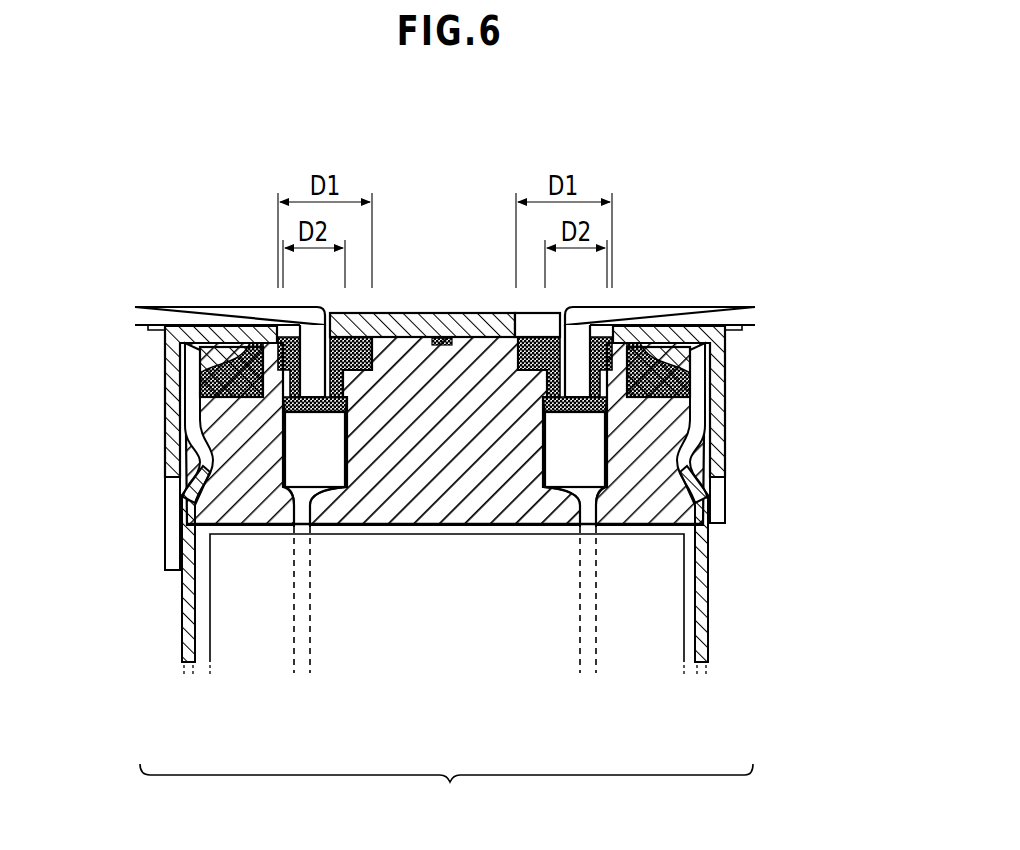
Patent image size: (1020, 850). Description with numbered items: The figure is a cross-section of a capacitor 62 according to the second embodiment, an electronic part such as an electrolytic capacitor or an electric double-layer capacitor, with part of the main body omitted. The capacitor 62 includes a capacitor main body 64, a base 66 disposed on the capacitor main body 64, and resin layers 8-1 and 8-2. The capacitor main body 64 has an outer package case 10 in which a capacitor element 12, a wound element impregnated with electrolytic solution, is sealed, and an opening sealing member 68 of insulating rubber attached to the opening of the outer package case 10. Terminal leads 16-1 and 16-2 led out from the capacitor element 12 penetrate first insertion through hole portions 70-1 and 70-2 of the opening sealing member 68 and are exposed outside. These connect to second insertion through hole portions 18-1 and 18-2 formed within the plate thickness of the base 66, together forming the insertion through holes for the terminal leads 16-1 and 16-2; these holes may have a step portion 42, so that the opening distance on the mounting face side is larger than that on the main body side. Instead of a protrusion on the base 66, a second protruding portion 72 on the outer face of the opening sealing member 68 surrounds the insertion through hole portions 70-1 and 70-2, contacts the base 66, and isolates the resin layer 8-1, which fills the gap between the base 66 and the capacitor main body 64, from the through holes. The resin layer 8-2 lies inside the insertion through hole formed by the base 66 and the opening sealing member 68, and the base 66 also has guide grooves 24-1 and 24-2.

The resin layer 8-1 is at (225, 363).
The resin layer 8-2 is at (360, 337).
The outer package case 10 is at (710, 642).
The capacitor element 12 is at (665, 615).
The terminal lead 16-1 is at (735, 307).
The terminal lead 16-2 is at (148, 307).
The second insertion through hole portion 18-1 is at (605, 320).
The second insertion through hole portion 18-2 is at (287, 317).
The guide groove 24-1 is at (742, 330).
The guide groove 24-2 is at (148, 330).
The step portion 42 is at (350, 337).
The capacitor 62 is at (446, 791).
The capacitor main body 64 is at (729, 572).
The base 66 is at (754, 389).
The opening sealing member 68 is at (657, 453).
The first insertion through hole portion 70-1 is at (555, 400).
The first insertion through hole portion 70-2 is at (335, 400).
The second protruding portion 72 is at (446, 385).